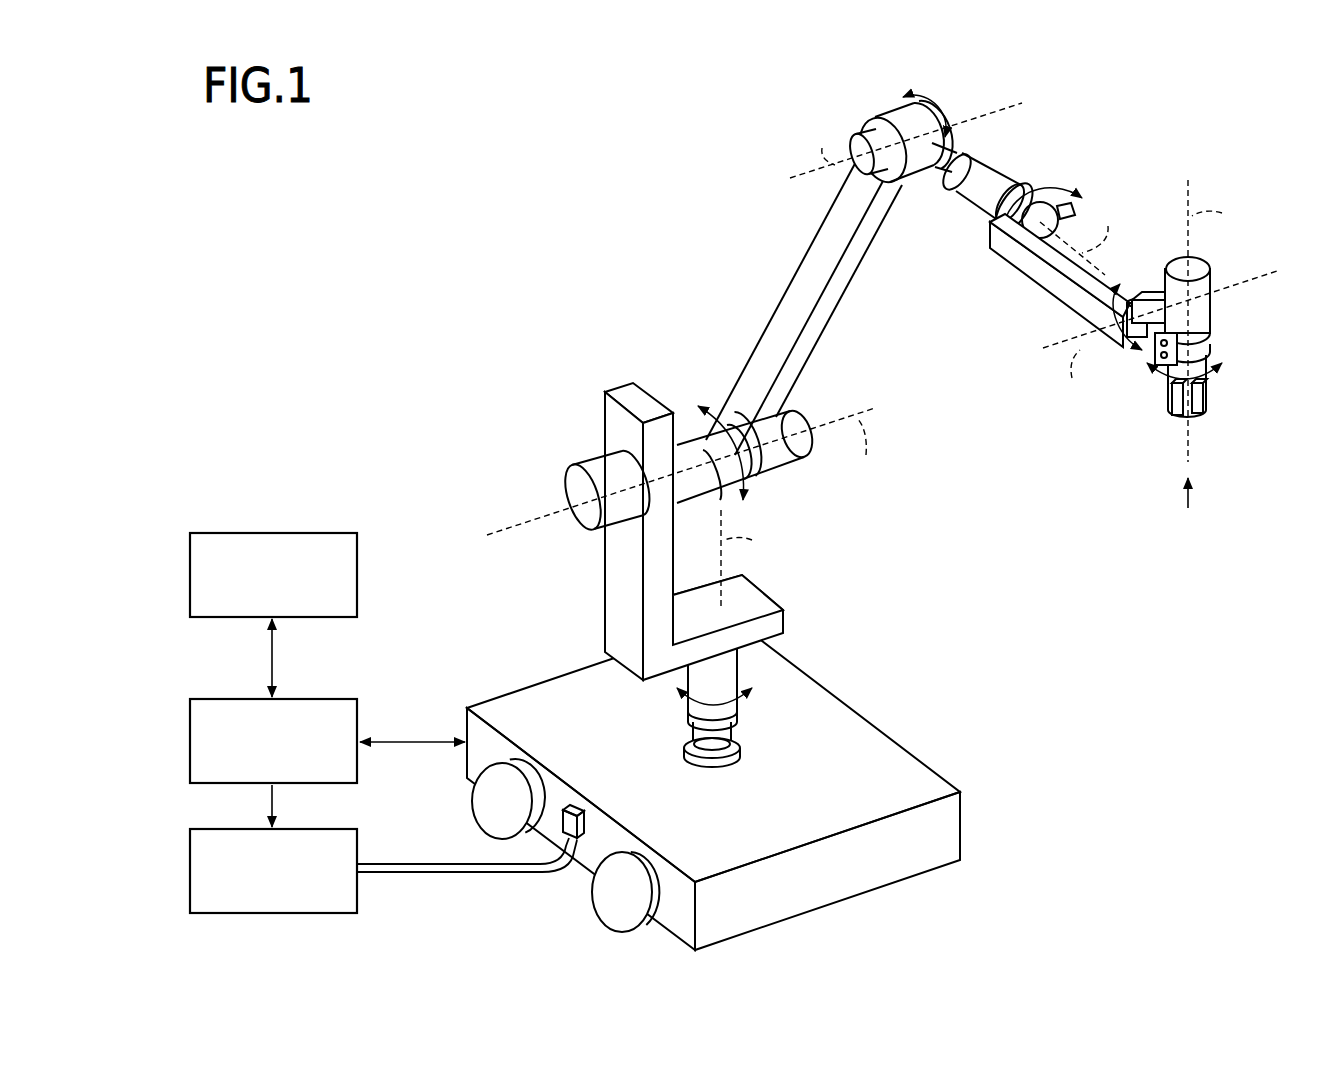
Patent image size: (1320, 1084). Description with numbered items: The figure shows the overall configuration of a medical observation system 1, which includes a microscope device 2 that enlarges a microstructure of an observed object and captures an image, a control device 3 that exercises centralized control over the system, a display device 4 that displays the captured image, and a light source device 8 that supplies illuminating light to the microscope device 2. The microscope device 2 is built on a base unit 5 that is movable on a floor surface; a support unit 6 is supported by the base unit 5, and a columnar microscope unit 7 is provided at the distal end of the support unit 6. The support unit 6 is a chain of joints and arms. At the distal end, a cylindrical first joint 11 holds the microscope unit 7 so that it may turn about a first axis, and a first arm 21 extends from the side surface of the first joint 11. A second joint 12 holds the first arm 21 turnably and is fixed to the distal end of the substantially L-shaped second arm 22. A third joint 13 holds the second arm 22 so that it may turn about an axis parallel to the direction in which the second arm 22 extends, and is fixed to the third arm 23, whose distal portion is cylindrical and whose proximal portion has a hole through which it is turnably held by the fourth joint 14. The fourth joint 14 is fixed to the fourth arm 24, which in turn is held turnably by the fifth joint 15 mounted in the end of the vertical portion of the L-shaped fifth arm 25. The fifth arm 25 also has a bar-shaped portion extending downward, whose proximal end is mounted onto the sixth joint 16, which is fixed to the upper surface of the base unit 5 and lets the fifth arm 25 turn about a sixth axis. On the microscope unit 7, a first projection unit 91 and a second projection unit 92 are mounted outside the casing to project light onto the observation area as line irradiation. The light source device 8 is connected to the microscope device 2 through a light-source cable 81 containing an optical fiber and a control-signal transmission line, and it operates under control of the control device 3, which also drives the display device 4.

The medical observation system 1 is at (493, 163).
The microscope device 2 is at (1050, 584).
The control device 3 is at (314, 676).
The display device 4 is at (311, 532).
The base unit 5 is at (942, 830).
The support unit 6 is at (927, 261).
The microscope unit 7 is at (1184, 336).
The light source device 8 is at (314, 807).
The first joint 11 is at (1182, 273).
The second joint 12 is at (1132, 340).
The third joint 13 is at (982, 208).
The fourth joint 14 is at (903, 117).
The fifth joint 15 is at (605, 480).
The sixth joint 16 is at (730, 727).
The first arm 21 is at (1155, 293).
The second arm 22 is at (1052, 287).
The third arm 23 is at (973, 187).
The fourth arm 24 is at (825, 253).
The fifth arm 25 is at (615, 600).
The light-source cable 81 is at (400, 863).
The first projection unit 91 is at (1165, 407).
The second projection unit 92 is at (1208, 403).